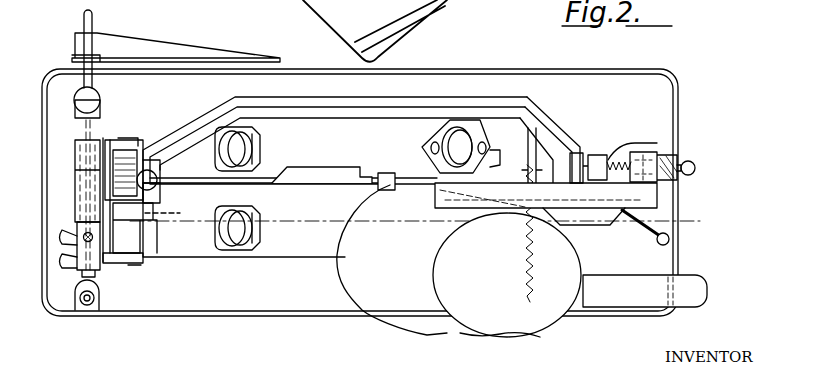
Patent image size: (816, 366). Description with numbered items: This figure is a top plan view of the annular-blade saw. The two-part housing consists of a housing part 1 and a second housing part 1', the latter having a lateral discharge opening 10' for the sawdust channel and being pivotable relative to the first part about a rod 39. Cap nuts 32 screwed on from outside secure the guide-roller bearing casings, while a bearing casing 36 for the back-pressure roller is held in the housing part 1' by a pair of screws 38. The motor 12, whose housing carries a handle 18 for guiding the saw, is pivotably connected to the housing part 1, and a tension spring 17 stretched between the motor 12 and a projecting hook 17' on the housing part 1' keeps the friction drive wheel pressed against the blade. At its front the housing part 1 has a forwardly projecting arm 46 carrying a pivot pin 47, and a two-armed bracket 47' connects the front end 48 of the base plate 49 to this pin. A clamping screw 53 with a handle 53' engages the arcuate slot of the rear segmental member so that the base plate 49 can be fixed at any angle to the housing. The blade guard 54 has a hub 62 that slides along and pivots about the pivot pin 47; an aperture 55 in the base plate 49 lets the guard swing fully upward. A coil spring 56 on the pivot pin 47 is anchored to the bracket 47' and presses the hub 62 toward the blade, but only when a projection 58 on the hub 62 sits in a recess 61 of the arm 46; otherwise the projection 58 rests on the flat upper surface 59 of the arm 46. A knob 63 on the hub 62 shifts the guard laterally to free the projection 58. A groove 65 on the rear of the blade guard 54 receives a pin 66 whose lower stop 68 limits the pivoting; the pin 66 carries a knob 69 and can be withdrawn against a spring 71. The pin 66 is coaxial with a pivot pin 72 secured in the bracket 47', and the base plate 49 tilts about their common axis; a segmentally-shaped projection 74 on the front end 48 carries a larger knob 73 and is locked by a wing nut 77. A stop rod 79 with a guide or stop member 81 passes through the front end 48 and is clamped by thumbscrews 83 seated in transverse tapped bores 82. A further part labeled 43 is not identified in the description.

The housing part 1 is at (415, 209).
The housing part 1' is at (293, 158).
The lateral discharge opening 10' is at (322, 157).
The motor 12 is at (352, 272).
The tension spring 17 is at (507, 251).
The projecting hook 17' is at (529, 137).
The handle 18 is at (690, 280).
The cap nuts 32 is at (262, 151).
The bearing casing 36 is at (462, 127).
The screws 38 is at (436, 140).
The rod 39 is at (490, 180).
The plate 43 is at (592, 187).
The forwardly projecting arm 46 is at (201, 250).
The pivot pin 47 is at (135, 276).
The two-armed bracket 47' is at (157, 266).
The front end of base plate 48 is at (58, 308).
The base plate 49 is at (300, 72).
The clamping screw 53 is at (632, 230).
The handle 53' is at (653, 254).
The blade guard 54 is at (543, 130).
The aperture 55 is at (305, 100).
The coil spring 56 is at (76, 186).
The projection 58 is at (148, 212).
The flat upper surface 59 is at (158, 203).
The recess 61 is at (170, 213).
The hub 62 is at (120, 145).
The knob 63 is at (150, 160).
The groove 65 is at (575, 150).
The pin 66 is at (666, 162).
The stop 68 is at (395, 58).
The knob 69 is at (688, 152).
The spring 71 is at (617, 157).
The pivot pin 72 is at (75, 170).
The larger knob 73 is at (88, 242).
The segmentally-shaped projection 74 is at (101, 258).
The wing nut 77 is at (72, 238).
The rod 79 is at (92, 30).
The guide or stop member 81 is at (172, 47).
The transverse tapped bore 82 is at (74, 98).
The thumbscrew 83 is at (103, 95).